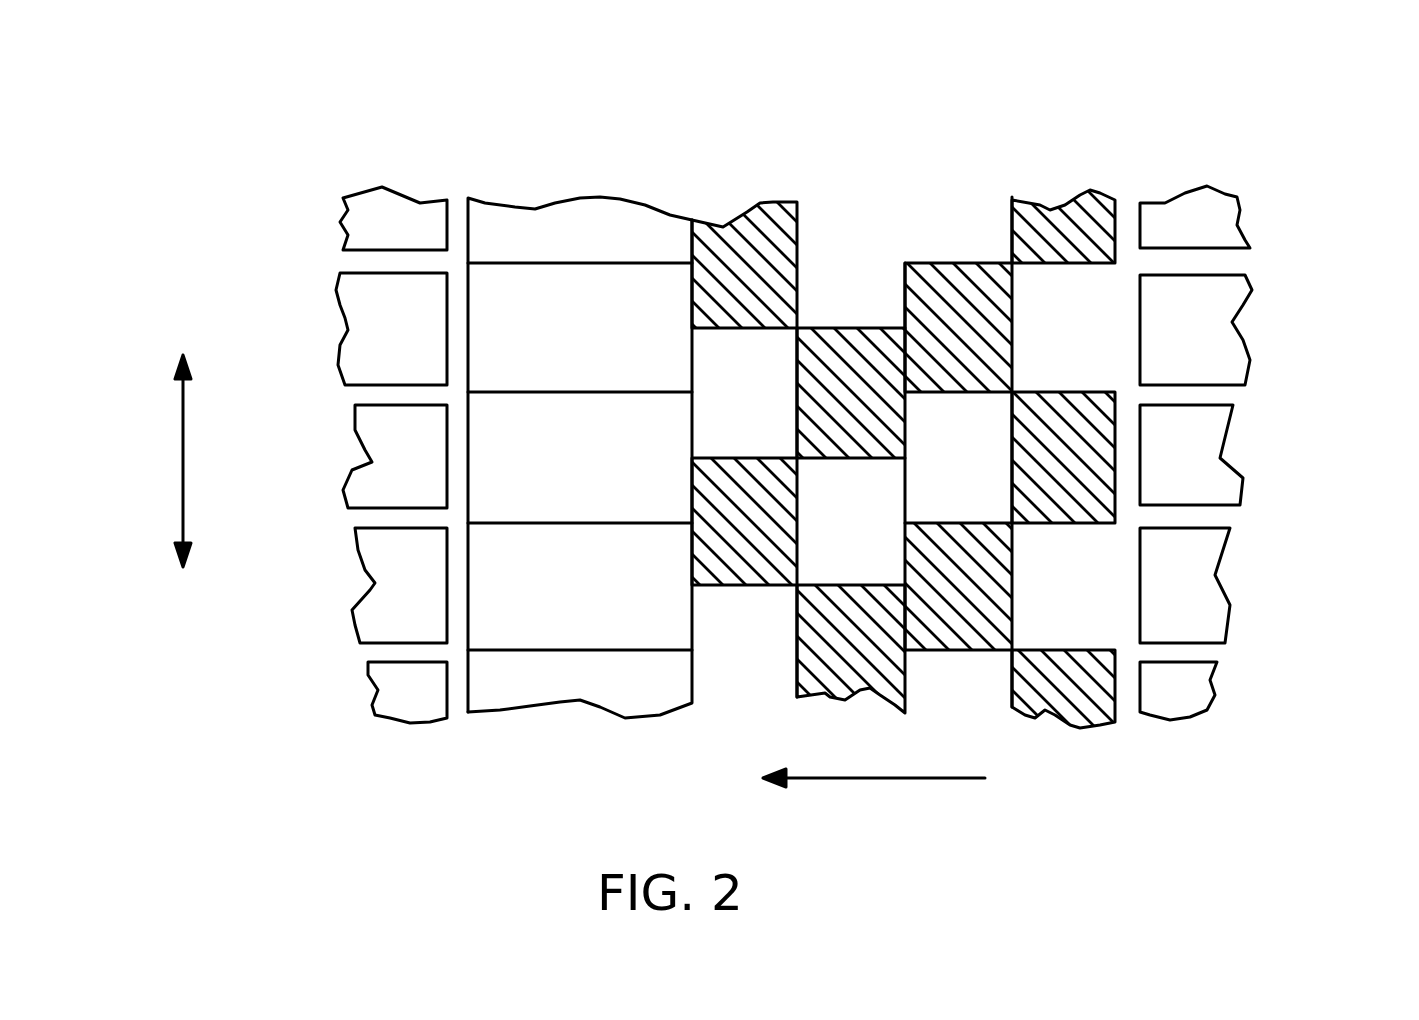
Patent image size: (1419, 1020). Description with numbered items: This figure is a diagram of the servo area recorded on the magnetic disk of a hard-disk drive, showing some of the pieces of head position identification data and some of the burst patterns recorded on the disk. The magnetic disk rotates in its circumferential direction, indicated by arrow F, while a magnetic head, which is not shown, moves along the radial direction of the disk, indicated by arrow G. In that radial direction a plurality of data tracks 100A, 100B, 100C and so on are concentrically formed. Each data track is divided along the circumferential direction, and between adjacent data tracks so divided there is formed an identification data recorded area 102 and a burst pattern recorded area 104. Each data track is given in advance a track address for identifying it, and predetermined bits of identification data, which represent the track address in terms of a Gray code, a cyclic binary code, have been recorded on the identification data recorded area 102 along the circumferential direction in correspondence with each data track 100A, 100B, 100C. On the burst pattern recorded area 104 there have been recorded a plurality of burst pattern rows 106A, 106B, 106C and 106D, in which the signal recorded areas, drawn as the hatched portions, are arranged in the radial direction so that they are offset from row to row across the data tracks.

The data track 100A is at (353, 330).
The data track 100B is at (372, 462).
The data track 100C is at (372, 582).
The identification data recorded area 102 is at (672, 101).
The burst pattern recorded area 104 is at (1118, 101).
The burst pattern row 106A is at (797, 177).
The burst pattern row 106B is at (901, 177).
The burst pattern row 106C is at (1006, 177).
The burst pattern row 106D is at (1116, 177).
The radial direction arrow G is at (173, 461).
The circumferential direction arrow F is at (874, 795).